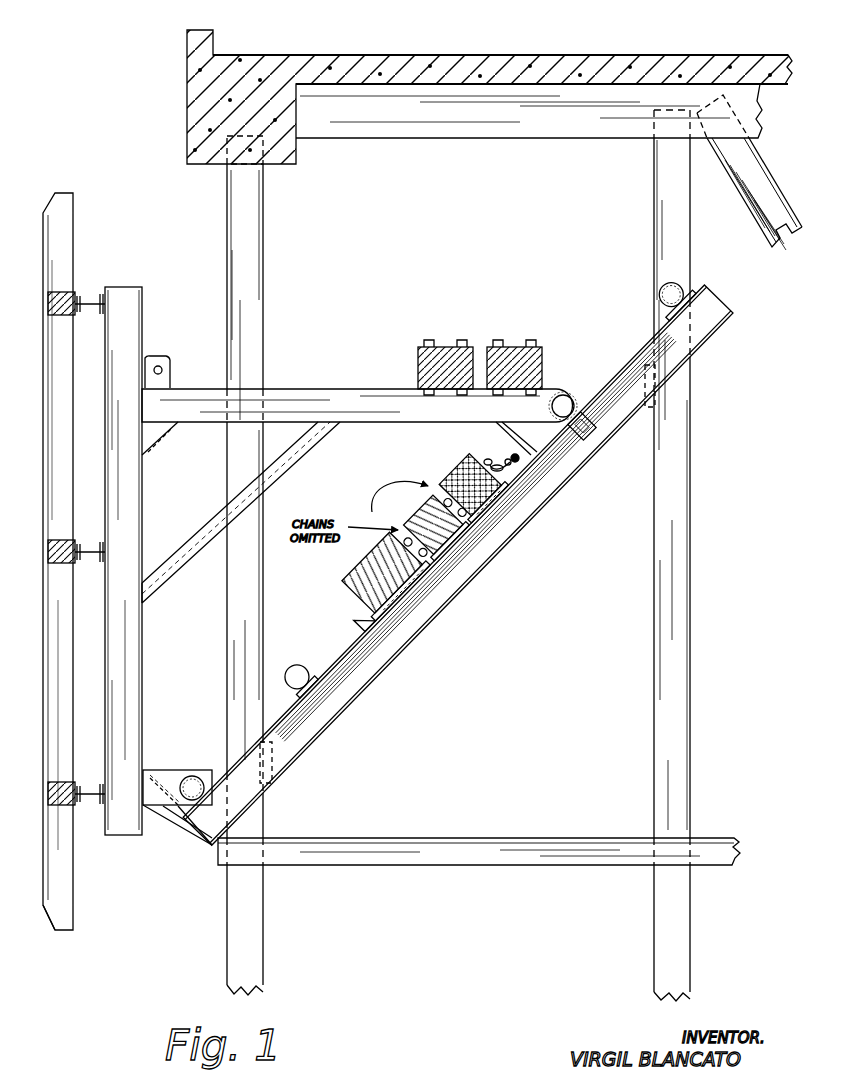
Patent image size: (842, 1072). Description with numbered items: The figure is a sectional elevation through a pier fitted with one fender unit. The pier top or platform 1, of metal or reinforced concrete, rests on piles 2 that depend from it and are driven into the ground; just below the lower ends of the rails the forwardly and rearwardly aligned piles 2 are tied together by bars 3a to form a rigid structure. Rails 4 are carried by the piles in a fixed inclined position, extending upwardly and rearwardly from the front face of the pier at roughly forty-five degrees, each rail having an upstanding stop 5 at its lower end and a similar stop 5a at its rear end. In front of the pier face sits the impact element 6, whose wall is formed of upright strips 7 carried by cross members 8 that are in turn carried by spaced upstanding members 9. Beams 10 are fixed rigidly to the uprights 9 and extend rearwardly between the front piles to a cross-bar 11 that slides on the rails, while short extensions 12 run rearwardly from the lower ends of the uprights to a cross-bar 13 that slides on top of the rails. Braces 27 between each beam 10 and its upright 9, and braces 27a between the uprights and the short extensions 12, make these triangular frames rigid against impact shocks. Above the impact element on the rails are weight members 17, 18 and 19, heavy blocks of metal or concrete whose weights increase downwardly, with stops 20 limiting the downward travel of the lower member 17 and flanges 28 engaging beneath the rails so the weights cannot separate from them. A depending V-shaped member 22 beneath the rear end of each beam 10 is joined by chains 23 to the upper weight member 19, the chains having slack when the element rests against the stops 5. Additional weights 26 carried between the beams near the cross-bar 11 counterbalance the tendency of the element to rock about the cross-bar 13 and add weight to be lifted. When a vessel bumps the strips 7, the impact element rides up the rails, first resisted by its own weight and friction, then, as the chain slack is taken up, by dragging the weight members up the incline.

The platform 1 is at (455, 62).
The piles 2 is at (250, 208).
The bars 3a is at (517, 838).
The rails 4 is at (360, 681).
The stop 5 is at (186, 814).
The stop 5a is at (672, 286).
The impact element 6 is at (36, 203).
The upright strips 7 is at (52, 700).
The cross members 8 is at (90, 296).
The upstanding members 9 is at (128, 492).
The beams 10 is at (300, 398).
The cross-bar 11 is at (572, 396).
The short extensions 12 is at (172, 772).
The cross-bar 13 is at (166, 818).
The weight member 17 is at (360, 586).
The weight member 18 is at (420, 520).
The weight member 19 is at (453, 494).
The stops 20 is at (297, 666).
The V-shaped member 22 is at (497, 433).
The chains 23 is at (517, 463).
The weights 26 is at (506, 347).
The braces 27 is at (202, 536).
The braces 27a is at (78, 904).
The flanges 28 is at (493, 518).